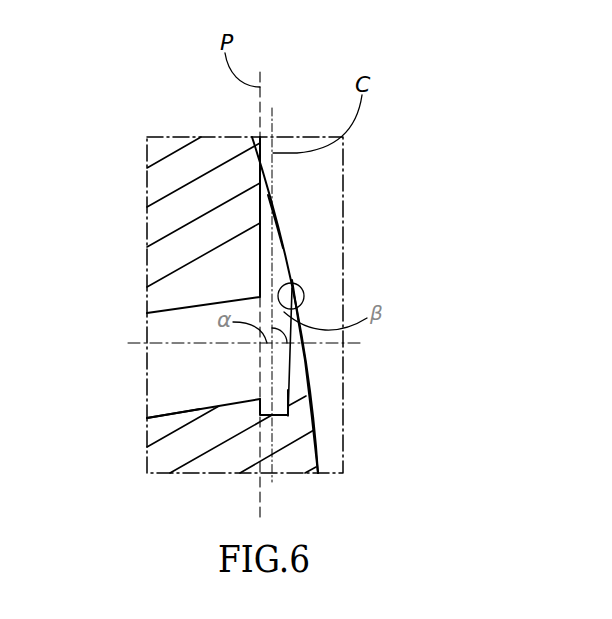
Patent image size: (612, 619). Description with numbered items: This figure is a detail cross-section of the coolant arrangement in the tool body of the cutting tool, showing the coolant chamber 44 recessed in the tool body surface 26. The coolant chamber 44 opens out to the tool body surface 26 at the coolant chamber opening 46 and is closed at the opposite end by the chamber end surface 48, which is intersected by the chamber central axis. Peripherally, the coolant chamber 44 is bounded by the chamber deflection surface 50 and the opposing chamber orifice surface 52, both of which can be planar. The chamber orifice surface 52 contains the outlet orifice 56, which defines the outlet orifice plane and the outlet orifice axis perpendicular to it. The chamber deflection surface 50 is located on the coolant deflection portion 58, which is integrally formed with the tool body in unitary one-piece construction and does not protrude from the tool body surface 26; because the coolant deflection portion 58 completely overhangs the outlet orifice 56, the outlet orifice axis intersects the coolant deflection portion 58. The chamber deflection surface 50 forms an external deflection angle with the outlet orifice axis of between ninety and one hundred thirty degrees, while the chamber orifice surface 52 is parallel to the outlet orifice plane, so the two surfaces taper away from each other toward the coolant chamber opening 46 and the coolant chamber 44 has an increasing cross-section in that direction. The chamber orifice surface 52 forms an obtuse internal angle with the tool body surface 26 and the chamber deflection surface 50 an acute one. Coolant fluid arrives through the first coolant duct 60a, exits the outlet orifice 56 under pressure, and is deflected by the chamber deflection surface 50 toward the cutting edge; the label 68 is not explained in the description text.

The tool body surface 26 is at (256, 143).
The coolant chamber 44 is at (232, 247).
The coolant chamber opening 46 is at (297, 215).
The chamber end surface 48 is at (288, 400).
The chamber deflection surface 50 is at (283, 280).
The chamber orifice surface 52 is at (262, 194).
The outlet orifice 56 is at (281, 362).
The coolant deflection portion 58 is at (313, 292).
The lower sealing surface 68 is at (316, 443).
The first coolant duct 60a is at (190, 390).